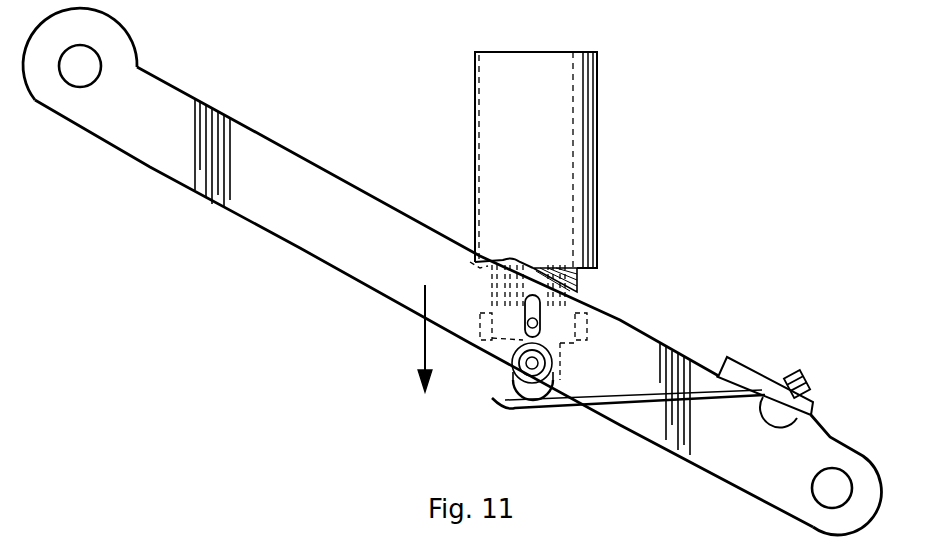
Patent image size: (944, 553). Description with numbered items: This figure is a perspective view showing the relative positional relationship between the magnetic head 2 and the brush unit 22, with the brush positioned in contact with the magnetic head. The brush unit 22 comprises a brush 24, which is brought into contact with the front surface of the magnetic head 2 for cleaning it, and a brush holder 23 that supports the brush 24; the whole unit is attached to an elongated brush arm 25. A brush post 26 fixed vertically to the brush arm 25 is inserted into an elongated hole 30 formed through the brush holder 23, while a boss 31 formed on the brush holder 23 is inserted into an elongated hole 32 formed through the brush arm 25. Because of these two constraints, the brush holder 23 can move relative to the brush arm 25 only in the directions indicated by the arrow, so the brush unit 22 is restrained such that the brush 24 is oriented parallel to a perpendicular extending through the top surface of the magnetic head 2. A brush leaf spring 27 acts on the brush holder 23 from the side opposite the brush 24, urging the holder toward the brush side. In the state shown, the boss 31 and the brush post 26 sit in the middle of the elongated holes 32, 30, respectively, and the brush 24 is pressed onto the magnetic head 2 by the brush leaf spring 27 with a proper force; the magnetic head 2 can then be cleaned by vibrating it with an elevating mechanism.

The magnetic head 2 is at (577, 123).
The brush unit 22 is at (643, 243).
The brush holder 23 is at (587, 330).
The brush 24 is at (578, 280).
The brush arm 25 is at (293, 220).
The brush post 26 is at (560, 363).
The brush leaf spring 27 is at (636, 410).
The elongated hole 30 is at (515, 337).
The boss 31 is at (522, 324).
The elongated hole 32 is at (510, 349).